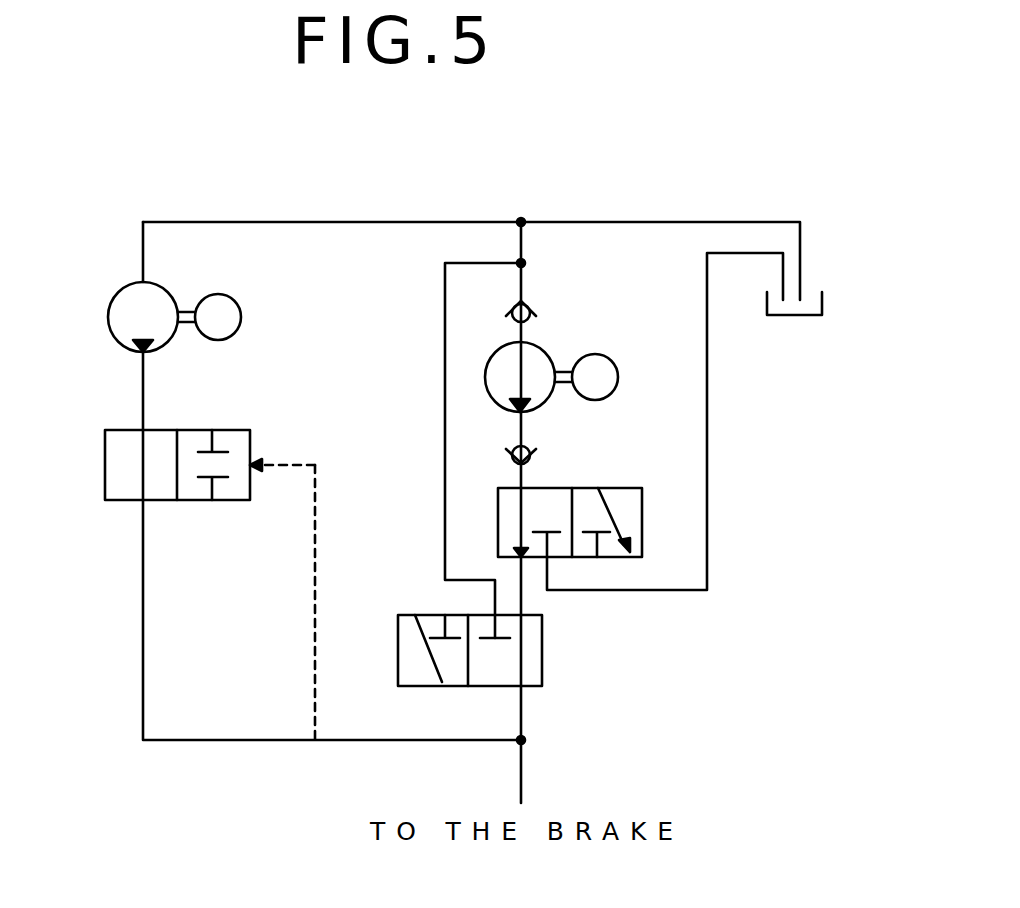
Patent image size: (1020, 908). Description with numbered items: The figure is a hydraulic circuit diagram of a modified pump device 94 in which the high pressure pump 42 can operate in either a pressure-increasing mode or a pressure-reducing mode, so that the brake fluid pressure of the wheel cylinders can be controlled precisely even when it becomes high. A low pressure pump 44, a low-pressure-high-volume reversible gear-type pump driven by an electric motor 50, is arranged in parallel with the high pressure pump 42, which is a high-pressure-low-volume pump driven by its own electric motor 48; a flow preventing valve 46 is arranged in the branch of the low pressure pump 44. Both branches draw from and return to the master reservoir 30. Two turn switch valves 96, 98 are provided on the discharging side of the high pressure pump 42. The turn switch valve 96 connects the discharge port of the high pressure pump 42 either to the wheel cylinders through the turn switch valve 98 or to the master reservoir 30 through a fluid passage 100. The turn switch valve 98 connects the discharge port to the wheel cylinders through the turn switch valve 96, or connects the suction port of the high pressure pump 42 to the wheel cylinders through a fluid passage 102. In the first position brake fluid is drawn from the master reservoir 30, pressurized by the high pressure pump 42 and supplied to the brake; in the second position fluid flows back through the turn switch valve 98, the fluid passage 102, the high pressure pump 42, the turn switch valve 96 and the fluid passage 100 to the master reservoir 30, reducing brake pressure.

The pump device 94 is at (352, 197).
The low pressure pump 44 is at (122, 312).
The electric motor 50 is at (220, 294).
The flow preventing valve 46 is at (115, 455).
The high pressure pump 42 is at (540, 363).
The electric motor 48 is at (619, 381).
The fluid passage 102 is at (442, 399).
The turn switch valve 96 is at (626, 498).
The fluid passage 100 is at (755, 507).
The master reservoir 30 is at (808, 305).
The turn switch valve 98 is at (405, 632).